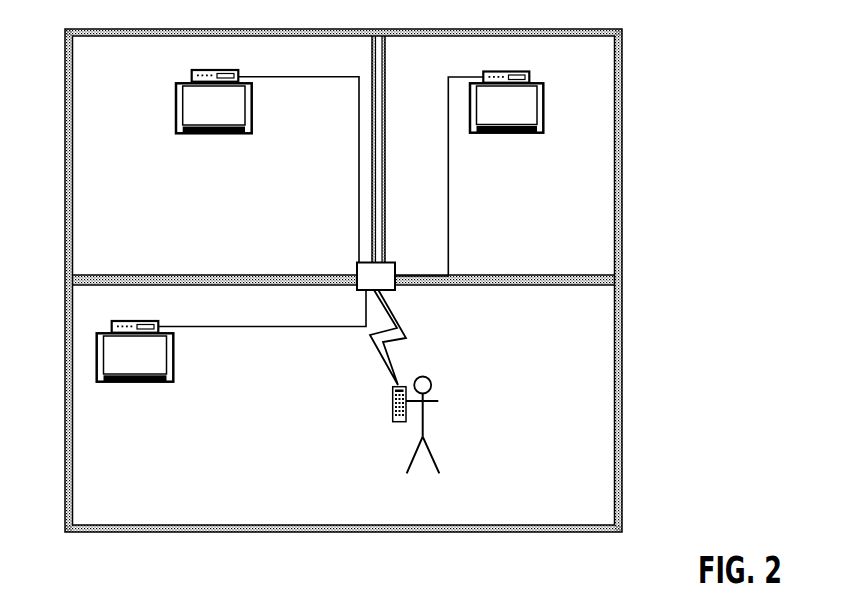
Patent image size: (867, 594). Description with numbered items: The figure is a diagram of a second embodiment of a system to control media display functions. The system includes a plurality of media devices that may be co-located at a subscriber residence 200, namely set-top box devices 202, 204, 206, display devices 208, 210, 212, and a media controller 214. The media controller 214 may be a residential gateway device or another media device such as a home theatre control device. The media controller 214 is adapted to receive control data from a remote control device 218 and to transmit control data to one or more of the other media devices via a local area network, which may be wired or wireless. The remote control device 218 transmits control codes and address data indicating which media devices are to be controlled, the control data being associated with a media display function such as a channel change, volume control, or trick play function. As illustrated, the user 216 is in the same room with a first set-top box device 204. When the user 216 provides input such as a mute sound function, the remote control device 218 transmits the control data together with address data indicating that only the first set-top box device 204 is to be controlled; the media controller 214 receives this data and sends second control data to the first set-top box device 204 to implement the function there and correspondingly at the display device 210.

The subscriber residence 200 is at (108, 29).
The set-top box device 202 is at (193, 70).
The first set-top box device 204 is at (137, 321).
The set-top box device 206 is at (508, 72).
The display device 208 is at (215, 134).
The display device 210 is at (137, 383).
The display device 212 is at (508, 134).
The media controller 214 is at (357, 263).
The user 216 is at (438, 401).
The remote control device 218 is at (393, 421).